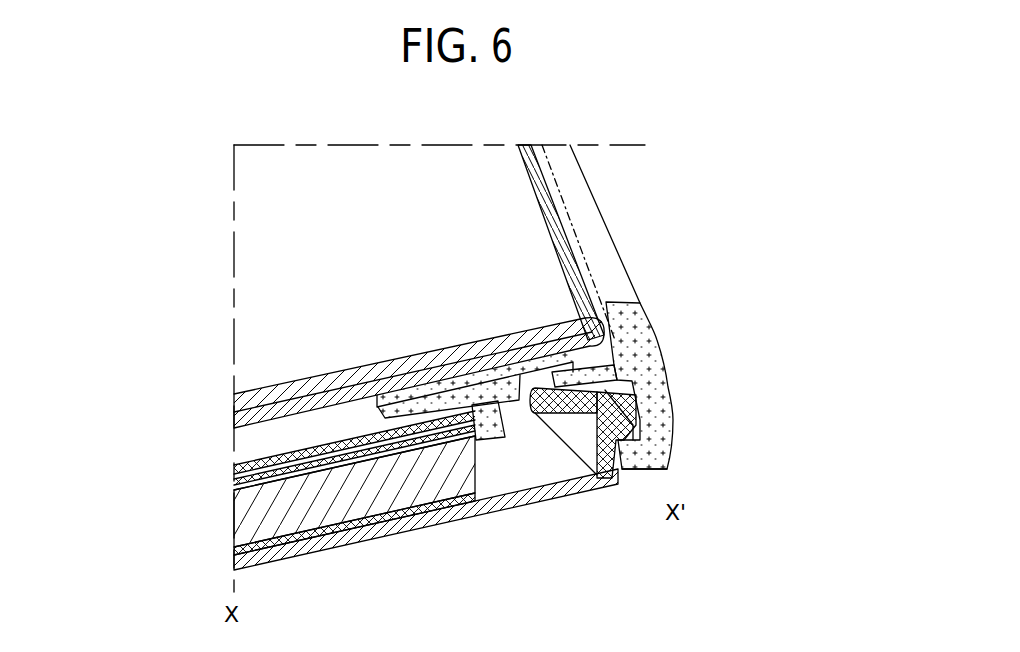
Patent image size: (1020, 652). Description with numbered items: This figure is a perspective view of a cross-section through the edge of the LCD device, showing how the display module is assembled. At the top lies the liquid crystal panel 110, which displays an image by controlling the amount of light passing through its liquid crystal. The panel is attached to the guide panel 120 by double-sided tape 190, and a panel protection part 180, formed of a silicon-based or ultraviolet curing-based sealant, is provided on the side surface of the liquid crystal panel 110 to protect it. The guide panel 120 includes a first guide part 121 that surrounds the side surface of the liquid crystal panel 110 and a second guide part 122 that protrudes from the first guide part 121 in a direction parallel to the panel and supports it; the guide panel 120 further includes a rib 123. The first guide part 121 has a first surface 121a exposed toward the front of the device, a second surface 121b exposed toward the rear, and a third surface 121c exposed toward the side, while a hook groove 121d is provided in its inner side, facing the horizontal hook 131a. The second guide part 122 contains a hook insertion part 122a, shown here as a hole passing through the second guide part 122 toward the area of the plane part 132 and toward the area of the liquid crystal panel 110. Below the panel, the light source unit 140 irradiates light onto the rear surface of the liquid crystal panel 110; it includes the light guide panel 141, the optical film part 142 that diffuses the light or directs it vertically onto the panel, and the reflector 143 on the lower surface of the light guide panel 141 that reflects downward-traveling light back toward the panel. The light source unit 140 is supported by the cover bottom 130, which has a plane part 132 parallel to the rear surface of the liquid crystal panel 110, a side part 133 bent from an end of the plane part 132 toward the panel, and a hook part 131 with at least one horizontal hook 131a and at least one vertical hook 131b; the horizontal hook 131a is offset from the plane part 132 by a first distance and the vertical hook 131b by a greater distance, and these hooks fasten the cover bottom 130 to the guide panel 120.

The liquid crystal panel 110 is at (268, 229).
The guide panel 120 is at (597, 376).
The first guide part 121 is at (676, 368).
The first surface 121a is at (612, 285).
The second surface 121b is at (705, 459).
The third surface 121c is at (640, 357).
The hook groove 121d is at (655, 382).
The second guide part 122 is at (509, 405).
The hook insertion part 122a is at (462, 492).
The rib 123 is at (473, 420).
The cover bottom 130 is at (435, 510).
The hook part 131 is at (575, 490).
The horizontal hook 131a is at (592, 462).
The vertical hook 131b is at (548, 413).
The plane part 132 is at (538, 422).
The side part 133 is at (610, 455).
The light source unit 140 is at (289, 486).
The light guide panel 141 is at (245, 516).
The optical film part 142 is at (245, 473).
The reflector 143 is at (245, 552).
The panel protection part 180 is at (553, 193).
The double-sided tape 190 is at (453, 349).